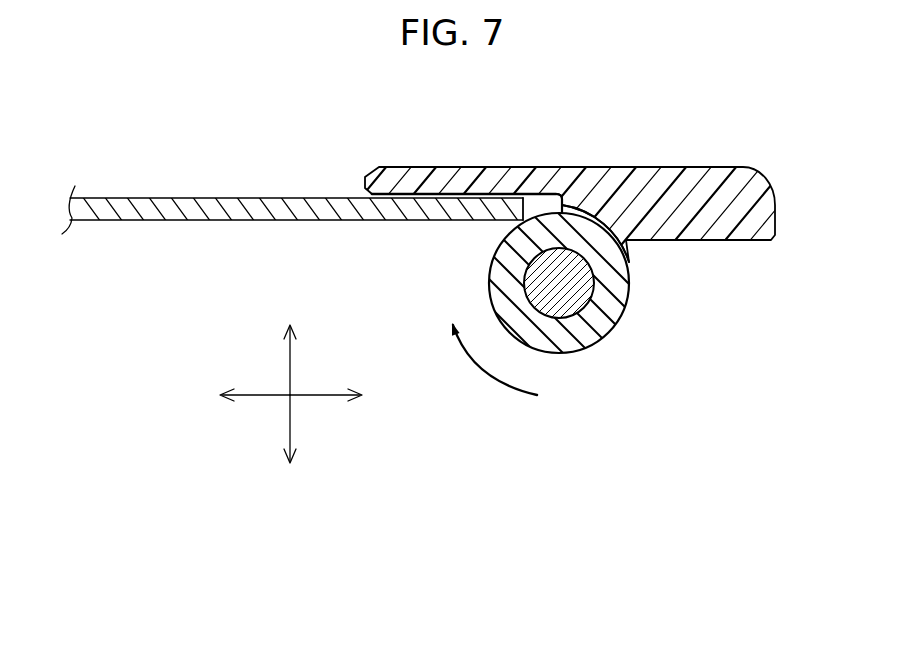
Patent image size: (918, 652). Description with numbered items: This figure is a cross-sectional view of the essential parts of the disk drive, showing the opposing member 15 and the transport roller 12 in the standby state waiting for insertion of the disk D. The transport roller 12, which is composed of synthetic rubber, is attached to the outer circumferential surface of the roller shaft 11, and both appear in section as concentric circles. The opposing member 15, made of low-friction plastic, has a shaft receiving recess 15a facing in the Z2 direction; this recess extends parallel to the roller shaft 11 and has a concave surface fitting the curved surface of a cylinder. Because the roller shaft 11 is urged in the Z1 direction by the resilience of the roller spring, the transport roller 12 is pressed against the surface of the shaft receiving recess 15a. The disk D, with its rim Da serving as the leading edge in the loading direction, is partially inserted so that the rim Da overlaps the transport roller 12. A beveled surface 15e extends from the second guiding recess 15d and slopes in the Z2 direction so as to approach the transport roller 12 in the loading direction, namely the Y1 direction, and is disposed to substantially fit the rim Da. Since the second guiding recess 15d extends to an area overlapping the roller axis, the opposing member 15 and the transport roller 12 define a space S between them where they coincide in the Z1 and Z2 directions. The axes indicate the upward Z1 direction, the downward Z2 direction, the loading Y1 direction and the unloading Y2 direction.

The opposing member 15 is at (729, 161).
The shaft receiving recess 15a is at (613, 236).
The second guiding recess 15d is at (400, 197).
The beveled surface 15e is at (579, 206).
The roller shaft 11 is at (556, 290).
The transport roller 12 is at (600, 325).
The disk D is at (228, 208).
The rim Da is at (509, 205).
The space S is at (540, 205).
The Z1 direction Z1 is at (290, 346).
The Z2 direction Z2 is at (290, 444).
The Y1 direction Y1 is at (341, 396).
The Y2 direction Y2 is at (238, 396).